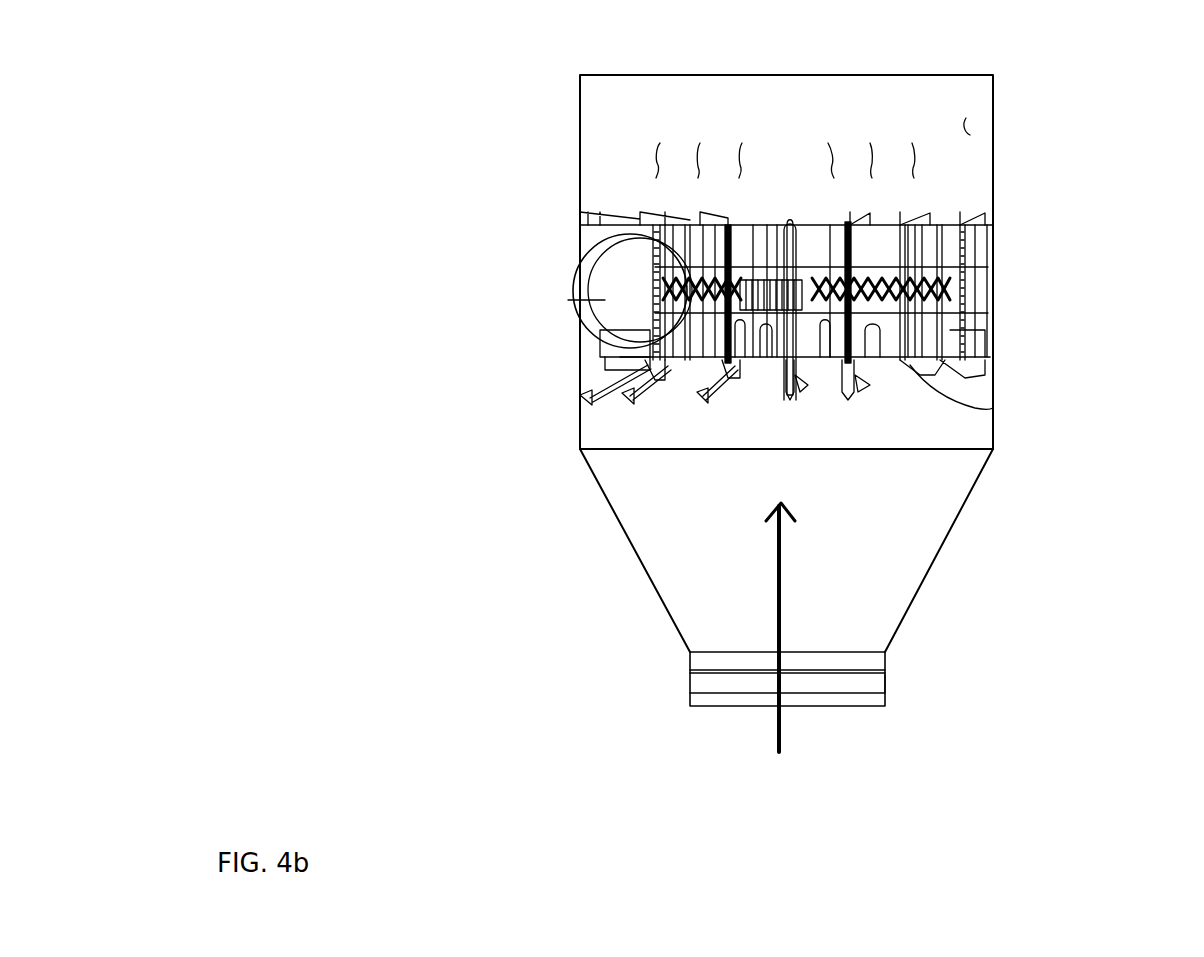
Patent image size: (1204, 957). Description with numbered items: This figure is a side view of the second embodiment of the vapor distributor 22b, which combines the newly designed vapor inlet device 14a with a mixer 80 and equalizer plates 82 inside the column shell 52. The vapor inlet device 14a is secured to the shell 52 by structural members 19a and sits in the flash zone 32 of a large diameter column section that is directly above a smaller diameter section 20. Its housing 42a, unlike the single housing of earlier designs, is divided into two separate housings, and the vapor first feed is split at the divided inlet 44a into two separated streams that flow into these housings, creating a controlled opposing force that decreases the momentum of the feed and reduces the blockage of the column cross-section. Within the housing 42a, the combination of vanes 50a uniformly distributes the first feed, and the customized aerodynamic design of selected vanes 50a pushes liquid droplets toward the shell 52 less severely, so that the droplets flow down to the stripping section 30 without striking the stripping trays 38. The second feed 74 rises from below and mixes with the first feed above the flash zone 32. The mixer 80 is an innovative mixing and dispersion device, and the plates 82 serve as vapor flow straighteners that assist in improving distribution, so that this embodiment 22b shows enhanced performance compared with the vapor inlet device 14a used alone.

The vapor inlet device 14a is at (866, 232).
The structural member 19a is at (790, 383).
The smaller diameter section 20 is at (692, 681).
The vapor distributor 22b is at (1060, 188).
The stripping section 30 is at (722, 652).
The flash zone 32 is at (614, 179).
The stripping trays 38 is at (888, 682).
The housing 42a is at (666, 225).
The inlet 44a is at (603, 300).
The vanes 50a is at (765, 365).
The shell 52 is at (967, 120).
The second feed 74 is at (782, 734).
The mixer 80 is at (993, 408).
The plates 82 is at (658, 147).